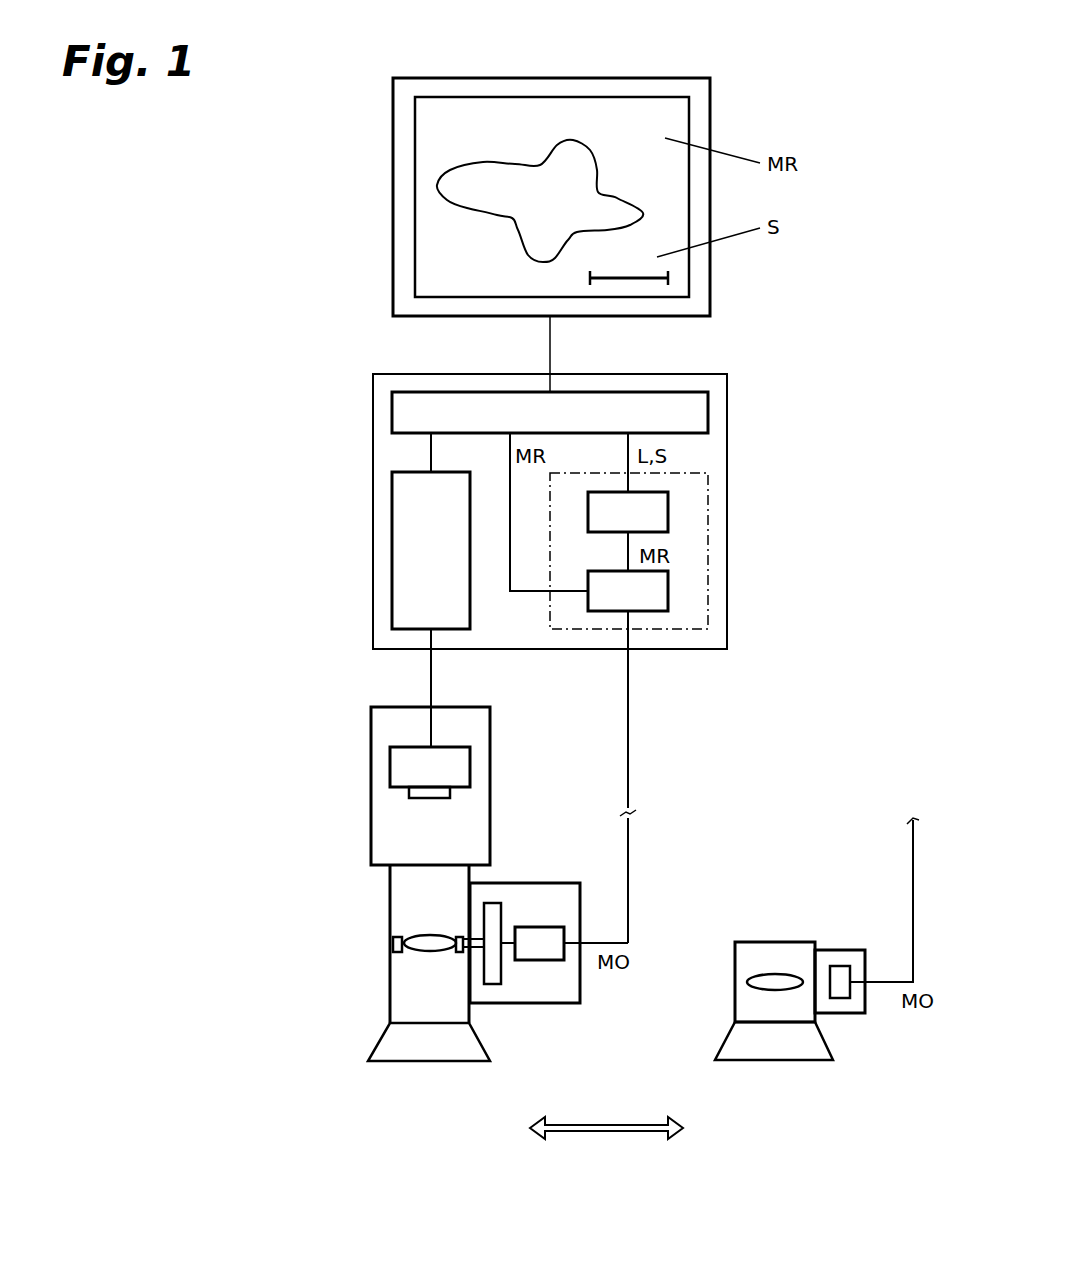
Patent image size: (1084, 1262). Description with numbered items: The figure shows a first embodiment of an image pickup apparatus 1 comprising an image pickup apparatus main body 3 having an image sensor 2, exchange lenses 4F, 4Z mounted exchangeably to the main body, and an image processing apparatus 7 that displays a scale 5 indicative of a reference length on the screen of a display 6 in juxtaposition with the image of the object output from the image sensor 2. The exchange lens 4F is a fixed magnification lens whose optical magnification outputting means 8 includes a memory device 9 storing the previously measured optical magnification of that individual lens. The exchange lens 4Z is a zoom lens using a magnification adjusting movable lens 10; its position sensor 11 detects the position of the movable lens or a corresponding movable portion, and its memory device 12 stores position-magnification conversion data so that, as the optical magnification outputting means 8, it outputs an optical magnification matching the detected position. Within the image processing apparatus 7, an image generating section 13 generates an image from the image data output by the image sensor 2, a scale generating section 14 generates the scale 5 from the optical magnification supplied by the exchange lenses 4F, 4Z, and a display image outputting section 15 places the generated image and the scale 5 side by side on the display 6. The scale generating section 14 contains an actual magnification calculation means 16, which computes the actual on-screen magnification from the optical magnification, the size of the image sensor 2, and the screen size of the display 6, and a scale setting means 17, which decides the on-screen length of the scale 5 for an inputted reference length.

The image pickup apparatus 1 is at (233, 260).
The image sensor 2 is at (374, 819).
The image pickup apparatus main body 3 is at (370, 782).
The exchange lens (zoom lens) 4Z is at (426, 1072).
The exchange lens (fixed magnification lens) 4F is at (780, 1071).
The scale 5 is at (688, 301).
The display 6 is at (392, 273).
The image processing apparatus 7 is at (372, 502).
The optical magnification outputting means 8 is at (563, 1003).
The memory device 9 is at (840, 982).
The magnification adjusting movable lens 10 is at (398, 960).
The position sensor 11 is at (410, 935).
The memory device 12 is at (540, 927).
The image generating section 13 is at (423, 575).
The scale generating section 14 is at (662, 630).
The display image outputting section 15 is at (698, 407).
The actual magnification calculation means 16 is at (650, 592).
The scale setting means 17 is at (658, 512).